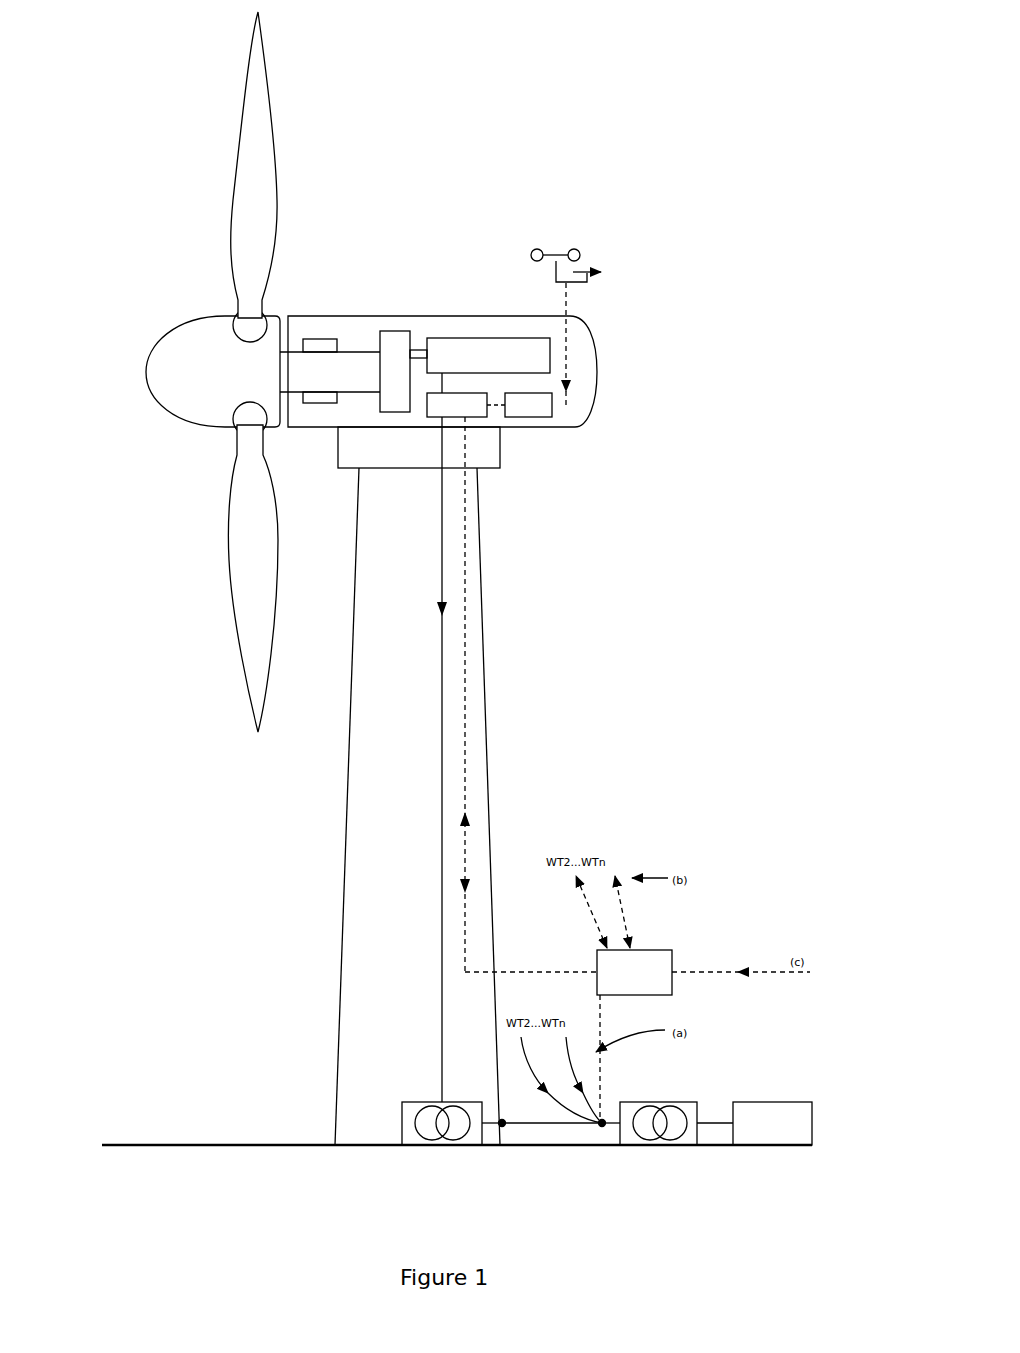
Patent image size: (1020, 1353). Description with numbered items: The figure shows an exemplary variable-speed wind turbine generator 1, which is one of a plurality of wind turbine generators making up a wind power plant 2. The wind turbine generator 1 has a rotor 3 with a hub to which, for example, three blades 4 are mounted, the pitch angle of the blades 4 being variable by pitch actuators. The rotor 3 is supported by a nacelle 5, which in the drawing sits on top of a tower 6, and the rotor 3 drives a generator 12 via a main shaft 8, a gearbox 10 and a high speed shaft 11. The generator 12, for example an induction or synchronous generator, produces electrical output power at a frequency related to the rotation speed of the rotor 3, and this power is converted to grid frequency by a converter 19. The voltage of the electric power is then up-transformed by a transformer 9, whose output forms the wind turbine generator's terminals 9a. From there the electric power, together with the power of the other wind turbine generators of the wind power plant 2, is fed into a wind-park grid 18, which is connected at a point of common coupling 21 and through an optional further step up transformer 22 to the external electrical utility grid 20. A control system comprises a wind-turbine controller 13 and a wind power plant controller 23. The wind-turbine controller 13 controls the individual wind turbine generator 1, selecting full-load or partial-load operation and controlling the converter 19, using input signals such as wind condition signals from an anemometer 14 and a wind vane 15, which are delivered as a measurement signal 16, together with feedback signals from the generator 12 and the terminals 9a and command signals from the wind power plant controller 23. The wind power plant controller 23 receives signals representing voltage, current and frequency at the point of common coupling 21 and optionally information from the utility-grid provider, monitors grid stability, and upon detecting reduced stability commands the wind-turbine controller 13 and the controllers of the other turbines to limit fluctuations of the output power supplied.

The wind turbine generator 1 is at (432, 153).
The wind power plant 2 is at (146, 200).
The rotor 3 is at (148, 380).
The blades 4 is at (272, 125).
The nacelle 5 is at (320, 316).
The tower 6 is at (342, 900).
The main shaft 8 is at (352, 341).
The transformer 9 is at (405, 1104).
The terminals 9a is at (503, 1127).
The gearbox 10 is at (390, 331).
The high speed shaft 11 is at (413, 352).
The generator 12 is at (485, 338).
The wind-turbine controller 13 is at (580, 418).
The anemometer 14 is at (575, 250).
The wind vane 15 is at (604, 257).
The wind measurement signal 16 is at (567, 345).
The wind-park grid 18 is at (560, 1127).
The converter 19 is at (430, 418).
The utility grid 20 is at (790, 1146).
The point of common coupling 21 is at (602, 1127).
The step up transformer 22 is at (685, 1146).
The wind power plant controller 23 is at (660, 950).